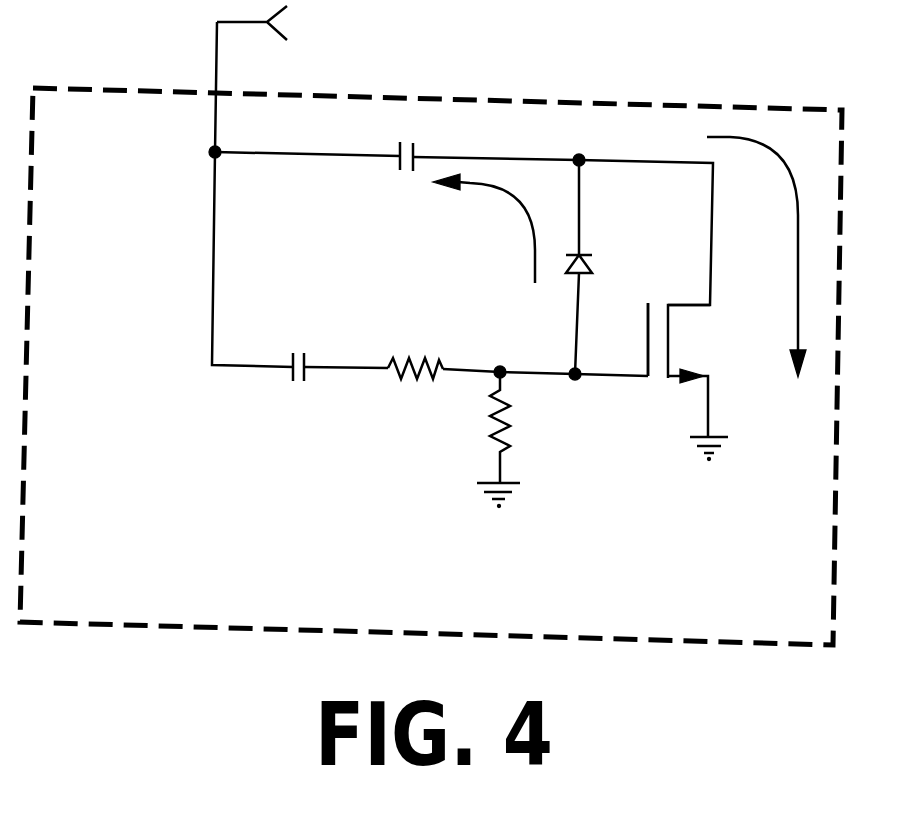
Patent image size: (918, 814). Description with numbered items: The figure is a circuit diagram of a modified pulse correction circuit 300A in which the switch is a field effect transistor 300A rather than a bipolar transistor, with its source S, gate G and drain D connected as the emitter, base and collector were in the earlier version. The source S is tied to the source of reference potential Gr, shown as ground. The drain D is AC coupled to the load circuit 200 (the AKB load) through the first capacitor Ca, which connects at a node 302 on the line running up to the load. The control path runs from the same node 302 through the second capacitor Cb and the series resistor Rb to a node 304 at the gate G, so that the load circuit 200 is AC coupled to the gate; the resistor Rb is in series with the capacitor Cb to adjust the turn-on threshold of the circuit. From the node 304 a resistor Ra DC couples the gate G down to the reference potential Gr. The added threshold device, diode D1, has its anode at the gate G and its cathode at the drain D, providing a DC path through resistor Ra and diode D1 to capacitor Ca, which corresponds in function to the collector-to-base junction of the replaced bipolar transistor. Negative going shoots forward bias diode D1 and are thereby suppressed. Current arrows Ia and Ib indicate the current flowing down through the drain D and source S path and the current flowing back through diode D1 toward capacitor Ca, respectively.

The load circuit 200 is at (392, 25).
The field effect transistor 300A is at (382, 622).
The node 302 is at (198, 158).
The node 304 is at (497, 360).
The first capacitor Ca is at (405, 172).
The second capacitor Cb is at (296, 385).
The resistor Ra is at (522, 415).
The further resistor Rb is at (412, 382).
The diode D1 is at (563, 283).
The gate G is at (631, 339).
The drain D is at (704, 296).
The source S is at (688, 403).
The source of reference potential Gr is at (703, 461).
The current Ia is at (756, 257).
The current Ib is at (484, 228).